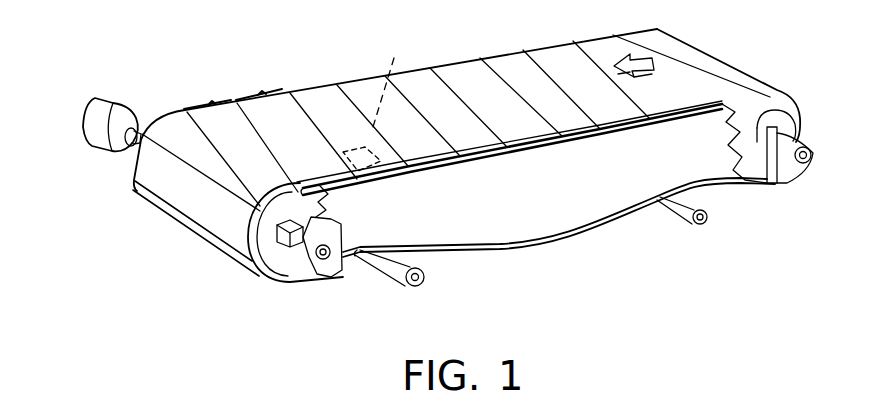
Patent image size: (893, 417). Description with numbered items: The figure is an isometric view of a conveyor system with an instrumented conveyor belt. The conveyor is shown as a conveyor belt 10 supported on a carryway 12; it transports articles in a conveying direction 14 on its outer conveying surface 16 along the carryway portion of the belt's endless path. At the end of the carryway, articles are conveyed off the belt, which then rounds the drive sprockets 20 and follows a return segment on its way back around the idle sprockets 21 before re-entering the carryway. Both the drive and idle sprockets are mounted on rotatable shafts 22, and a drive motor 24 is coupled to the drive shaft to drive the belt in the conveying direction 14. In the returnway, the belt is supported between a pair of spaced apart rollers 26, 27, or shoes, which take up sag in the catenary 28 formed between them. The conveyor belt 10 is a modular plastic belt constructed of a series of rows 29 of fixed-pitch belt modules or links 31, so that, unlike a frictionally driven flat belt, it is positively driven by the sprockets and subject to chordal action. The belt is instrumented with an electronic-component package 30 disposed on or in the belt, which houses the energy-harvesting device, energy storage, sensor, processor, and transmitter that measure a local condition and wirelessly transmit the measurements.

The conveyor belt 10 is at (543, 51).
The carryway 12 is at (521, 153).
The conveying direction 14 is at (643, 60).
The outer conveying surface 16 is at (317, 92).
The drive sprockets 20 is at (282, 263).
The idle sprockets 21 is at (747, 164).
The rotatable shafts 22 is at (265, 272).
The drive motor 24 is at (108, 110).
The roller 26 is at (683, 220).
The roller 27 is at (396, 278).
The catenary 28 is at (560, 234).
The rows 29 is at (233, 90).
The electronic-component package 30 is at (387, 103).
The belt modules or links 31 is at (358, 89).